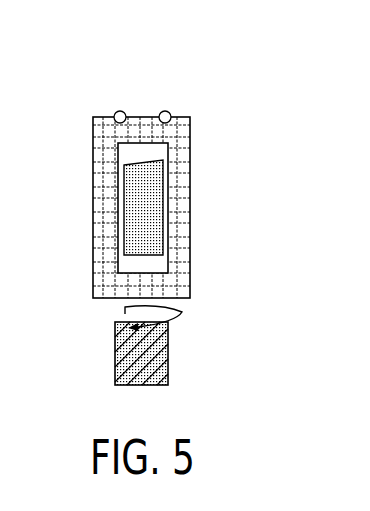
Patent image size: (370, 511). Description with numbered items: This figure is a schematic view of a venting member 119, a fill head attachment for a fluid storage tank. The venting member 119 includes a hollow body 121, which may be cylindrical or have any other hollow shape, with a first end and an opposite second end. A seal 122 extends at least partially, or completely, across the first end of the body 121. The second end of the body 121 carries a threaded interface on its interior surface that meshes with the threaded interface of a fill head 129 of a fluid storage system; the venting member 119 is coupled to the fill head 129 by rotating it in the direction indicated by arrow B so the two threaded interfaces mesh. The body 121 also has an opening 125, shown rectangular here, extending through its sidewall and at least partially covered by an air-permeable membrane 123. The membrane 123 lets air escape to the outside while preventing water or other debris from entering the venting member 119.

The venting member 119 is at (238, 149).
The hollow body 121 is at (103, 195).
The seal 122 is at (120, 111).
The air-permeable membrane 123 is at (137, 238).
The opening 125 is at (176, 216).
The fill head 129 is at (162, 372).
The arrow B is at (180, 315).